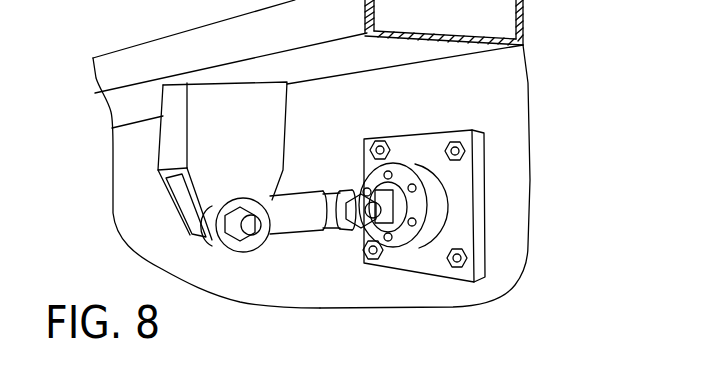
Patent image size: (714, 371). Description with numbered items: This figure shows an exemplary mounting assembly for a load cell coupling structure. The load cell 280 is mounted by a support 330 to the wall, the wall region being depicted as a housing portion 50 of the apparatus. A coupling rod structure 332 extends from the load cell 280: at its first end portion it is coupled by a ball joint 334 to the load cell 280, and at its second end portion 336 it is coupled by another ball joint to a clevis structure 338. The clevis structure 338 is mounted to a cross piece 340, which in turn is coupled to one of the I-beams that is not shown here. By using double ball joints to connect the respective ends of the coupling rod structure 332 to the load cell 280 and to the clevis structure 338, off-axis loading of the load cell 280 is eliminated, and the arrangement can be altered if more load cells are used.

The housing 50 is at (512, 152).
The load cell 280 is at (427, 202).
The support 330 is at (462, 227).
The coupling rod structure 332 is at (292, 228).
The ball joint 334 is at (340, 215).
The second end portion 336 is at (205, 242).
The clevis structure 338 is at (192, 193).
The cross piece 340 is at (128, 104).